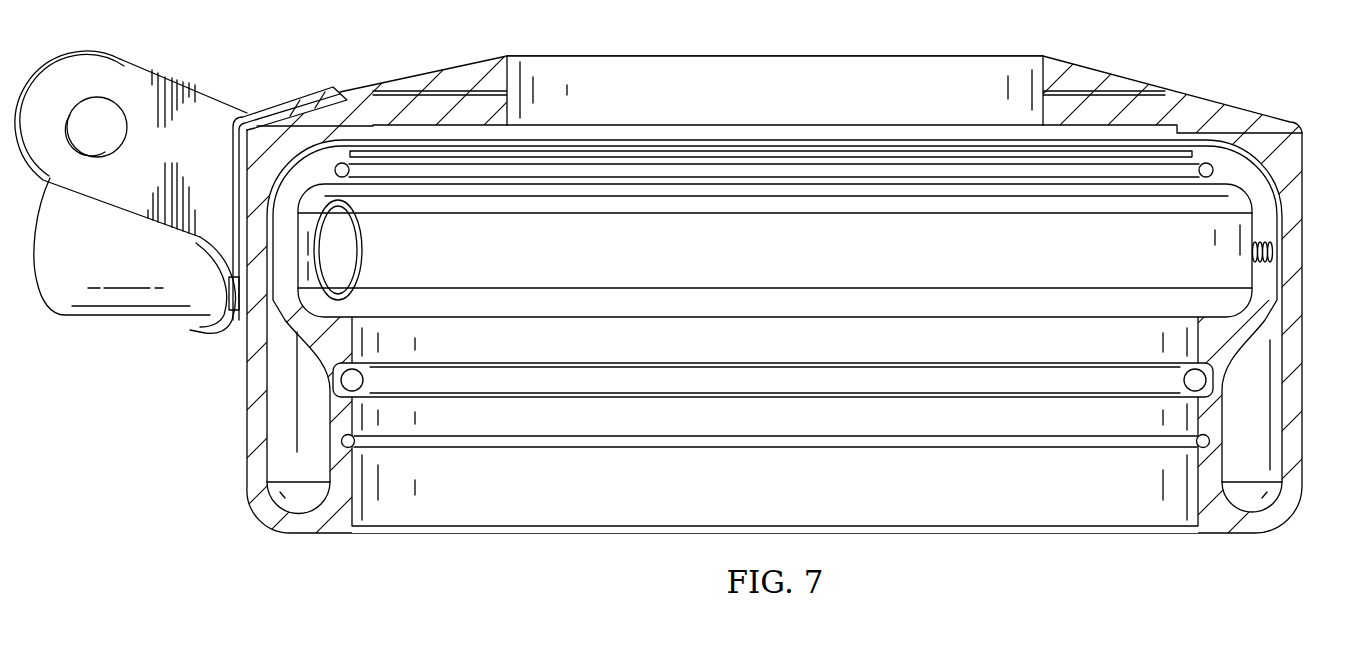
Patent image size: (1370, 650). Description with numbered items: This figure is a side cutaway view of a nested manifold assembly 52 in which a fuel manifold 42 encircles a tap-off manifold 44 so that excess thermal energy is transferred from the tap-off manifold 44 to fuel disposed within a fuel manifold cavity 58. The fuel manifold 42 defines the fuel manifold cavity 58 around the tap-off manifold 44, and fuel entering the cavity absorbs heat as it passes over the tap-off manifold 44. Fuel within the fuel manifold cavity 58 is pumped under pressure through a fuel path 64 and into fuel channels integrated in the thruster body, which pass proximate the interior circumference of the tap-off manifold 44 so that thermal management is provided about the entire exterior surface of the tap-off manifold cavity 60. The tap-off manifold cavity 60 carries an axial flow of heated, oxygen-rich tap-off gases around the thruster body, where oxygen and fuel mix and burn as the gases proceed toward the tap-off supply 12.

The tap-off supply 12 is at (133, 317).
The fuel manifold 42 is at (1295, 367).
The tap-off manifold 44 is at (1260, 277).
The nested manifold assembly 52 is at (1077, 60).
The fuel manifold cavity 58 is at (1248, 503).
The tap-off manifold cavity 60 is at (787, 268).
The fuel path 64 is at (1273, 190).